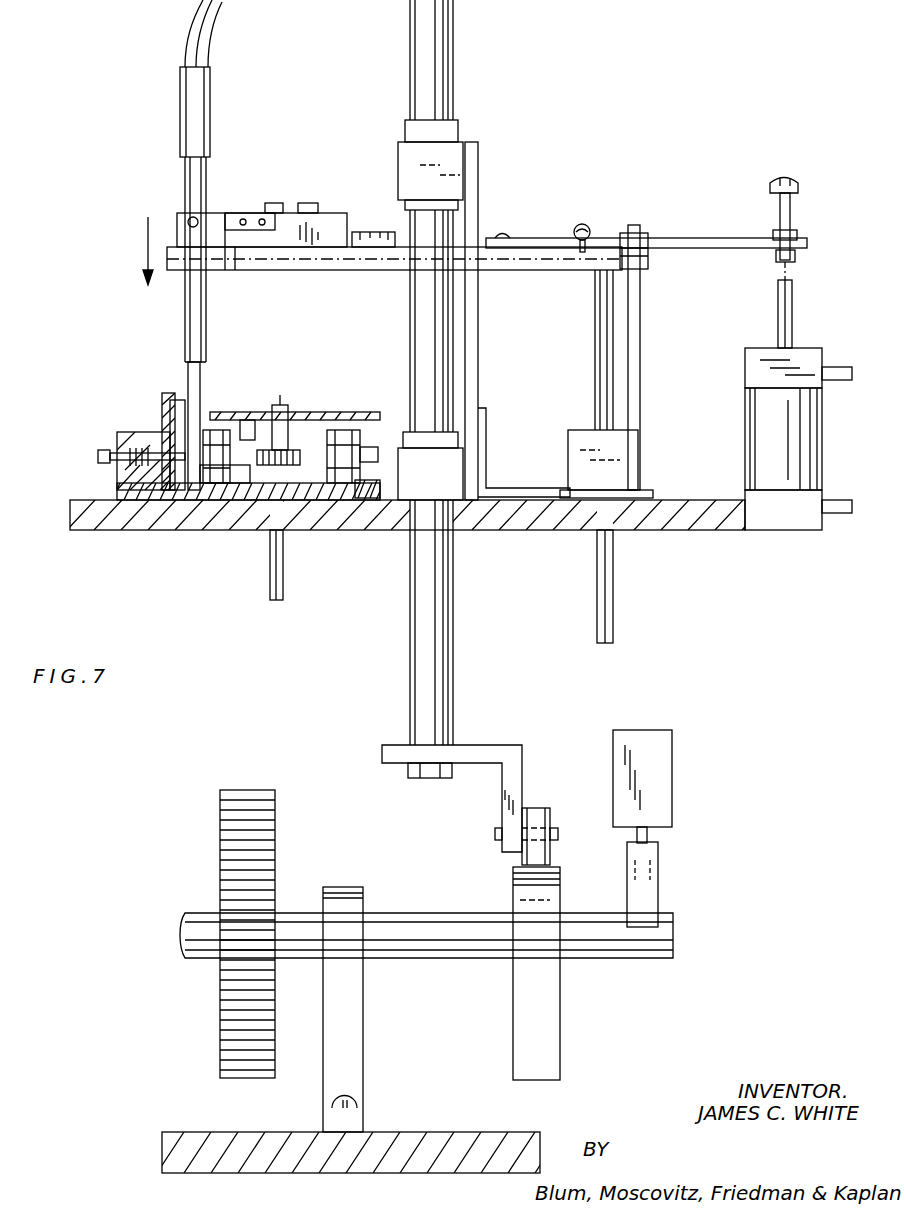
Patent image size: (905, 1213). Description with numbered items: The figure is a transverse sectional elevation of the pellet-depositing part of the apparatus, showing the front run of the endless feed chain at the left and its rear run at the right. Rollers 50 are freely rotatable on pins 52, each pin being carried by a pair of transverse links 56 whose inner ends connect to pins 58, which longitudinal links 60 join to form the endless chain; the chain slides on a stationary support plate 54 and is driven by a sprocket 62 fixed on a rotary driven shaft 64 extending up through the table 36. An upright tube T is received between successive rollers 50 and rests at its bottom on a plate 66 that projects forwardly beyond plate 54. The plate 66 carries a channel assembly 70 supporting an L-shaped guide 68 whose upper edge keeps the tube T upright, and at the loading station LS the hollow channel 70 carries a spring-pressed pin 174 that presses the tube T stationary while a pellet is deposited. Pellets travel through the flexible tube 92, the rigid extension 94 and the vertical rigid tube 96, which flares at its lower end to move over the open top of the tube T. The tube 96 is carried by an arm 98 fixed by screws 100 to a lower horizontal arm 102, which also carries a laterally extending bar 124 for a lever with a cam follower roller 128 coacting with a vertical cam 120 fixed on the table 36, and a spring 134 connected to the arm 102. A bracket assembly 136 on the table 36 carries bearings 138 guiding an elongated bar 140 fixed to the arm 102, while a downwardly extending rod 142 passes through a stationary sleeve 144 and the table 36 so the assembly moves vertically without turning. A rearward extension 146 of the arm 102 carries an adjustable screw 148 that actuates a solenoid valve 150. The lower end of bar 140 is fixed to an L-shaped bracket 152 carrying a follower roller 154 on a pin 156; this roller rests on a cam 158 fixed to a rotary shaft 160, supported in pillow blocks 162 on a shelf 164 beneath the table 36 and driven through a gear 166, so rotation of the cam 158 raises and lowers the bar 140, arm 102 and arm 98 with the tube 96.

The table 36 is at (118, 525).
The rollers 50 is at (218, 430).
The pins 52 is at (360, 458).
The stationary support plate 54 is at (365, 498).
The links 56 is at (230, 500).
The pins 58 is at (303, 465).
The links 60 is at (258, 425).
The sprocket 62 is at (293, 437).
The rotary driven shaft 64 is at (283, 592).
The plate 66 is at (175, 500).
The L-shaped guide 68 is at (162, 397).
The channel assembly 70 is at (117, 478).
The flexible tube 92 is at (210, 44).
The rigid extension 94 is at (210, 112).
The rigid tube 96 is at (206, 172).
The arm 98 is at (335, 213).
The screws 100 is at (285, 205).
The horizontal arm 102 is at (380, 272).
The cam 120 is at (640, 360).
The bar 124 is at (390, 225).
The cam follower roller 128 is at (645, 232).
The spring 134 is at (582, 224).
The bracket assembly 136 is at (486, 412).
The bearings 138 is at (460, 130).
The bar 140 is at (455, 648).
The rod 142 is at (597, 360).
The stationary sleeve 144 is at (568, 460).
The extension 146 is at (720, 238).
The adjustable screw 148 is at (790, 208).
The solenoid valve 150 is at (800, 348).
The L-shaped bracket 152 is at (524, 755).
The follower roller 154 is at (538, 808).
The pin 156 is at (558, 835).
The cam 158 is at (560, 1020).
The rotary shaft 160 is at (408, 913).
The pillow blocks 162 is at (363, 1018).
The shelf 164 is at (480, 1160).
The gear 166 is at (277, 822).
The spring-pressed pin 174 is at (170, 425).
The tube T is at (188, 368).
The loading station LS is at (108, 412).